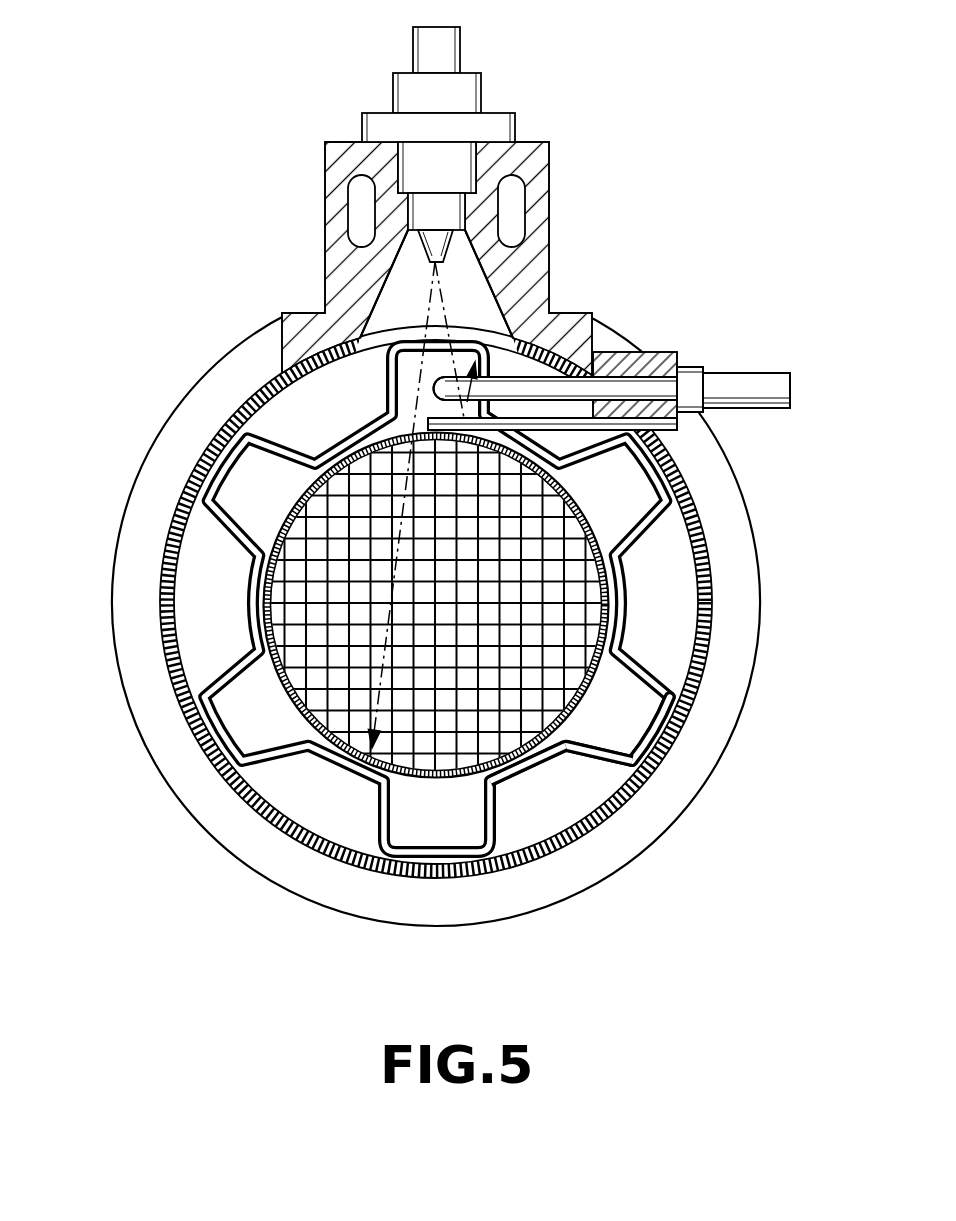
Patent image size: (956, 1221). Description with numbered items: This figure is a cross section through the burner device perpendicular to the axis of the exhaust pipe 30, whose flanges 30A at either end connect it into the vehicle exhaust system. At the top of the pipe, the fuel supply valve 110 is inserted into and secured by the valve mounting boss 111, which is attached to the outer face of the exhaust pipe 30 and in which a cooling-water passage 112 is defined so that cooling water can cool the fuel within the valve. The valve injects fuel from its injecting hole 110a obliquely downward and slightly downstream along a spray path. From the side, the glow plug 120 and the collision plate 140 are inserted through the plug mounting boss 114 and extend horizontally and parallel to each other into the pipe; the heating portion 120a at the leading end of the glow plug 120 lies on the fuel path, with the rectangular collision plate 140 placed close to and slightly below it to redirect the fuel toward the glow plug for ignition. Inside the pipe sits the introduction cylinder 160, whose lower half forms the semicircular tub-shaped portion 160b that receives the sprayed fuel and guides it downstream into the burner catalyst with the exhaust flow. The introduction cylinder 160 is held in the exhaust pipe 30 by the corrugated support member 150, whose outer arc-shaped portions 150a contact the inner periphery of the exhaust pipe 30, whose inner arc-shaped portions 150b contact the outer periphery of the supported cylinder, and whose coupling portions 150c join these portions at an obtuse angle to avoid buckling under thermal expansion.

The exhaust pipe 30 is at (243, 791).
The flange 30A is at (150, 690).
The fuel supply valve 110 is at (447, 50).
The injecting hole 110a is at (430, 267).
The valve mounting boss 111 is at (533, 160).
The cooling-water passage 112 is at (510, 215).
The plug mounting boss 114 is at (645, 356).
The glow plug 120 is at (635, 388).
The heating portion 120a is at (443, 390).
The collision plate 140 is at (553, 424).
The support member 150 is at (669, 552).
The outer arc-shaped portion 150a is at (648, 722).
The inner arc-shaped portion 150b is at (550, 762).
The coupling portion 150c is at (642, 760).
The introduction cylinder 160 is at (587, 517).
The tub-shaped portion 160b is at (597, 690).